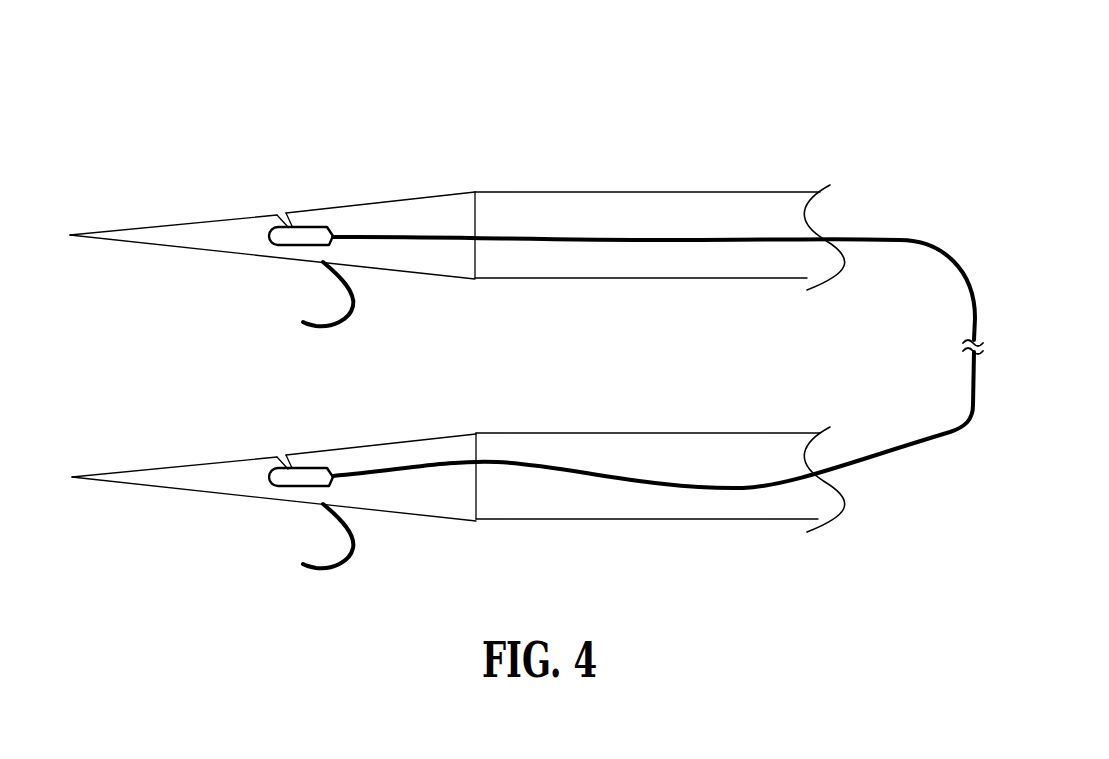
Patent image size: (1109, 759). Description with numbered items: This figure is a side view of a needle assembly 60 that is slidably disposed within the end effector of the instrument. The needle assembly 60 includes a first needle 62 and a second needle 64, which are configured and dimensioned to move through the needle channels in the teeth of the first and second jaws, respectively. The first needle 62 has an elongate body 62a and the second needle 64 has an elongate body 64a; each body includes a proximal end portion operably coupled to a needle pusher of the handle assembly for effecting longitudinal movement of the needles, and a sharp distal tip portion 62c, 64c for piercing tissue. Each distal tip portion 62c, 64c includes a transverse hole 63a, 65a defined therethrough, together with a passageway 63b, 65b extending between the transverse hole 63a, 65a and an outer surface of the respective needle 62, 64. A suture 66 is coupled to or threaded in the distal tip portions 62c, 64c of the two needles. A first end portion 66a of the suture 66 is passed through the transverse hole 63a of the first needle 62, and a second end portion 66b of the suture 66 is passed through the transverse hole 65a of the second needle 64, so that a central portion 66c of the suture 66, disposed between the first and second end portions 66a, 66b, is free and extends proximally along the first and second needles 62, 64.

The needle assembly 60 is at (597, 132).
The first needle 62 is at (490, 198).
The elongate body 62a is at (670, 270).
The distal tip portion 62c is at (301, 160).
The transverse hole 63a is at (283, 238).
The passageway 63b is at (287, 222).
The second needle 64 is at (575, 510).
The elongate body 64a is at (515, 438).
The distal tip portion 64c is at (167, 516).
The transverse hole 65a is at (295, 480).
The passageway 65b is at (285, 455).
The suture 66 is at (922, 219).
The first end portion 66a is at (357, 298).
The second end portion 66b is at (353, 547).
The central portion 66c is at (950, 433).